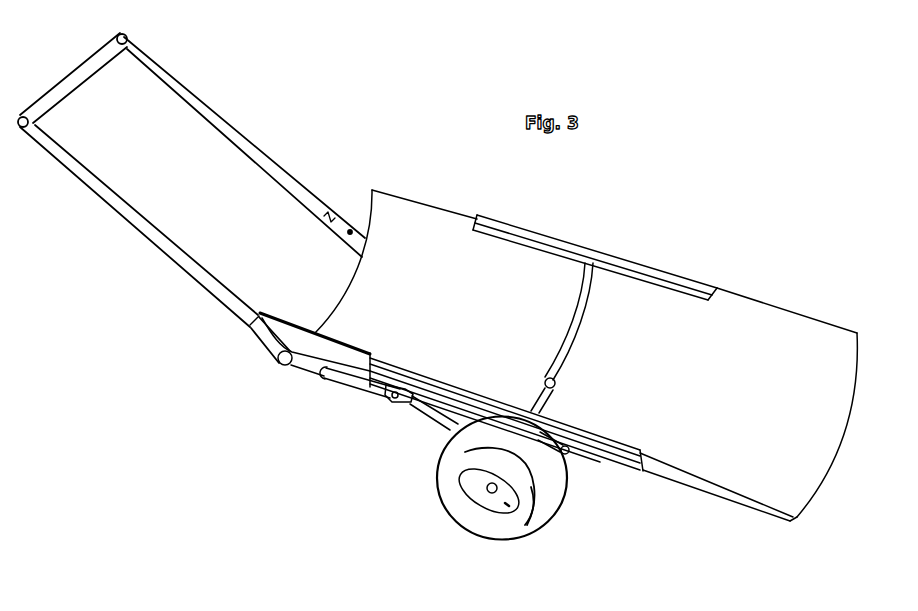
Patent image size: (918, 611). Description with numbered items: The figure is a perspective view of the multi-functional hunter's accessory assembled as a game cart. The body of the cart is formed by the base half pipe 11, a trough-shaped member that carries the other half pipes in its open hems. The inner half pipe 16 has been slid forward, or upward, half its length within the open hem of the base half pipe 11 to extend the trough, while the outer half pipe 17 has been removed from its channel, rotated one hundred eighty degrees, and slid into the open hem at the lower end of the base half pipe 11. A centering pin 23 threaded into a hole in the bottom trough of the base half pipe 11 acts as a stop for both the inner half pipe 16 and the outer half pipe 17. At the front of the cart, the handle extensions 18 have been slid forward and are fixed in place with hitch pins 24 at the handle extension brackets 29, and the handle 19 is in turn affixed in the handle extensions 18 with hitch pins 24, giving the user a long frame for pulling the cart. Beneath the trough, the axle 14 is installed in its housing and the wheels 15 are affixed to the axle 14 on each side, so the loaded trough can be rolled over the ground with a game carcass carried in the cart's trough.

The base half pipe 11 is at (607, 460).
The axle 14 is at (490, 492).
The wheels 15 is at (530, 537).
The inner half pipe 16 is at (403, 200).
The outer half pipe 17 is at (793, 312).
The handle extension 18 is at (338, 383).
The handle 19 is at (173, 263).
The centering pin 23 is at (593, 320).
The hitch pins 24 is at (270, 342).
The handle extension bracket 29 is at (402, 405).